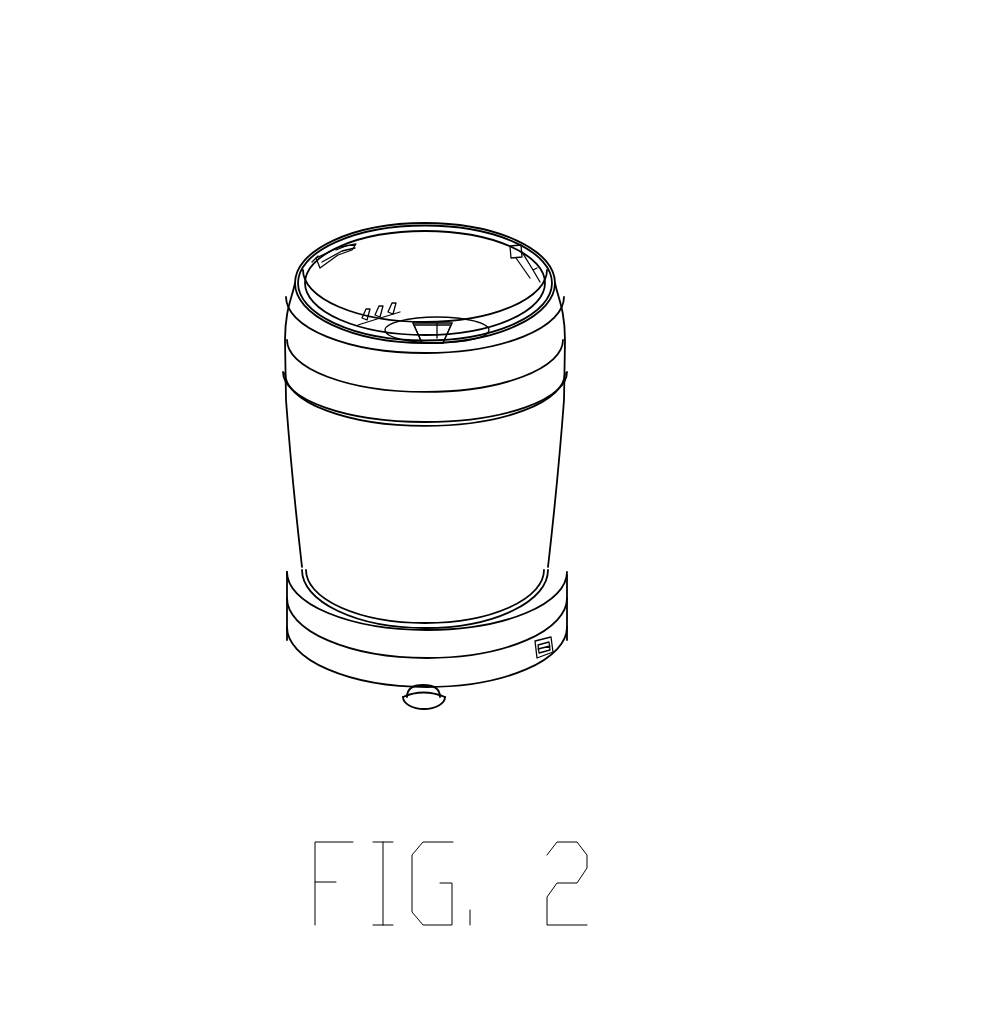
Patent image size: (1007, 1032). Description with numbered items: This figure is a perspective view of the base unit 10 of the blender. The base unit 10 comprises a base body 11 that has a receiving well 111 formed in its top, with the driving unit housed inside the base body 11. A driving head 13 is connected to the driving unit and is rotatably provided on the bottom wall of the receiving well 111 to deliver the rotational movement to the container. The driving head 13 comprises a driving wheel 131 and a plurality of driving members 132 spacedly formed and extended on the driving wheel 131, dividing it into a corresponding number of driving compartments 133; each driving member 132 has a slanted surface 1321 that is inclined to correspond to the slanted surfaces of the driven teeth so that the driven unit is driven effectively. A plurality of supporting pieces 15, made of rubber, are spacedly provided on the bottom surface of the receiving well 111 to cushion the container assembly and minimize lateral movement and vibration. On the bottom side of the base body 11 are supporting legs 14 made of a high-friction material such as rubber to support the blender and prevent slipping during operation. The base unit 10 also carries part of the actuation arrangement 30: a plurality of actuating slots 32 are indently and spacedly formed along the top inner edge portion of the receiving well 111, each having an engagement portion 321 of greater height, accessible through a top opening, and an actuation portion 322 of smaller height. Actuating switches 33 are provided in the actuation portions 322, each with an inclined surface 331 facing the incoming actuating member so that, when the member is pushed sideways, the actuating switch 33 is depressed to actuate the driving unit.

The base unit 10 is at (603, 485).
The base body 11 is at (615, 552).
The driving head 13 is at (398, 305).
The supporting legs 14 is at (445, 702).
The supporting pieces 15 is at (375, 325).
The actuation arrangement 30 is at (557, 262).
The actuating slots 32 is at (537, 240).
The actuating switches 33 is at (352, 238).
The receiving well 111 is at (402, 262).
The driving wheel 131 is at (432, 330).
The driving members 132 is at (413, 325).
The driving compartments 133 is at (455, 322).
The engagement portion 321 is at (313, 252).
The actuation portion 322 is at (338, 240).
The inclined surface 331 is at (324, 249).
The slanted surface 1321 is at (412, 335).